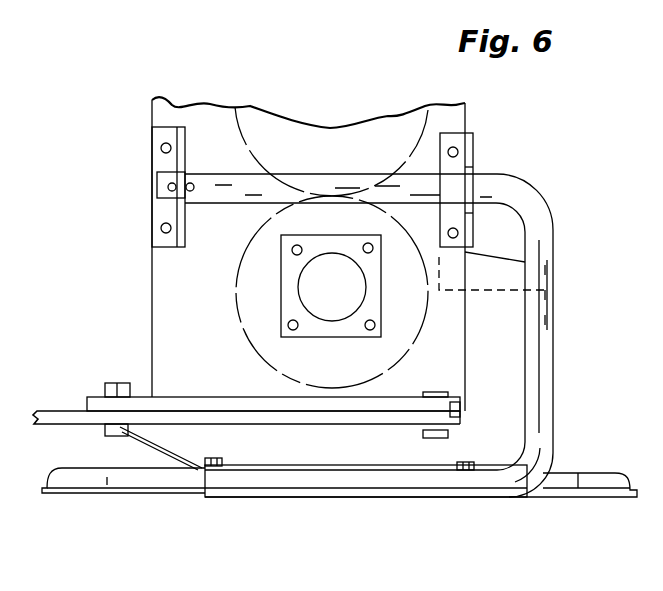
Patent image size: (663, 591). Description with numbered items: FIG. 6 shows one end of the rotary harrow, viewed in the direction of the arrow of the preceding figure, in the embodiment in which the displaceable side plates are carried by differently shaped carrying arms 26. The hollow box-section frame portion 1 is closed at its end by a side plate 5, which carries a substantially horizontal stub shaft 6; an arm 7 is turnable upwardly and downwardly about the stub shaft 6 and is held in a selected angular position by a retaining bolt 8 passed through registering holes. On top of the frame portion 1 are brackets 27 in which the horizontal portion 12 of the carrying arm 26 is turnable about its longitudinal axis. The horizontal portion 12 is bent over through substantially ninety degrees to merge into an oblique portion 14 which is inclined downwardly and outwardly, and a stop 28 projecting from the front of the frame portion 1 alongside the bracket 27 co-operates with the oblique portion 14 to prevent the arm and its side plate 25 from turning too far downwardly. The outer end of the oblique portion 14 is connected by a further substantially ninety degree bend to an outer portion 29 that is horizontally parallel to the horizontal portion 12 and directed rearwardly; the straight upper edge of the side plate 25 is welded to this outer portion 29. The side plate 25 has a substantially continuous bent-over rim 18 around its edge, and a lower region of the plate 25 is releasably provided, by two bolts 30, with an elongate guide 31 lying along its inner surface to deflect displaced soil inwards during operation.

The hollow box-section frame portion 1 is at (244, 104).
The side plate 5 is at (198, 397).
The stub shaft 6 is at (438, 392).
The arm 7 is at (55, 386).
The retaining bolt 8 is at (120, 383).
The horizontal portion 12 is at (340, 158).
The oblique portion 14 is at (537, 380).
The rim 18 is at (157, 490).
The side plate 25 is at (617, 437).
The carrying arm 26 is at (548, 329).
The bracket 27 is at (155, 145).
The stop 28 is at (510, 273).
The outer portion 29 is at (363, 480).
The bolt 30 is at (218, 445).
The guide 31 is at (330, 443).